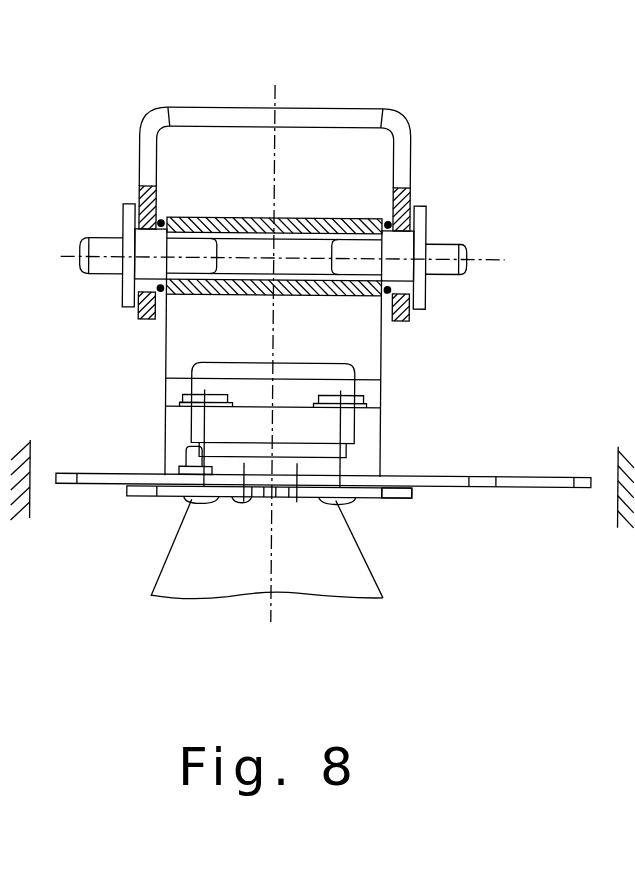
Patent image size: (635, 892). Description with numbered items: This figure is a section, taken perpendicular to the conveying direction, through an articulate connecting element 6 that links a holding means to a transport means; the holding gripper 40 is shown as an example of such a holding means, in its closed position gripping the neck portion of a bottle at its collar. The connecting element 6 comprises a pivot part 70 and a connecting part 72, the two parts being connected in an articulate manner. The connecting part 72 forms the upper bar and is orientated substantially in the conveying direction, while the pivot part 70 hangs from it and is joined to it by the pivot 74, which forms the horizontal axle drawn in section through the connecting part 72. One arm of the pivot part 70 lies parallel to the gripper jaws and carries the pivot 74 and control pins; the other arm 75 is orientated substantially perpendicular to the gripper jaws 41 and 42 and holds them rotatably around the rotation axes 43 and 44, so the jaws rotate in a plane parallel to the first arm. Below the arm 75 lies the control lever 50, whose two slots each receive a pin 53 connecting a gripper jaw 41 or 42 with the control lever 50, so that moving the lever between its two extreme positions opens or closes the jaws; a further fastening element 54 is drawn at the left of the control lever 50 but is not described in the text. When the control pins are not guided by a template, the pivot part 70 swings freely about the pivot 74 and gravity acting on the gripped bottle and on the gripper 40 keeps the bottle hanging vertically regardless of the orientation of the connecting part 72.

The connecting element 6 is at (321, 216).
The connecting part 72 is at (328, 118).
The pivot part 70 is at (327, 227).
The pivot 74 is at (383, 270).
The arm 75 is at (192, 322).
The control lever 50 is at (513, 478).
The holding gripper 40 is at (322, 504).
The gripper jaw 41 is at (417, 492).
The gripper jaw 42 is at (143, 492).
The rotation axis 43 is at (343, 502).
The rotation axis 44 is at (200, 502).
The pin 53 is at (300, 505).
The bolt 54 is at (250, 505).